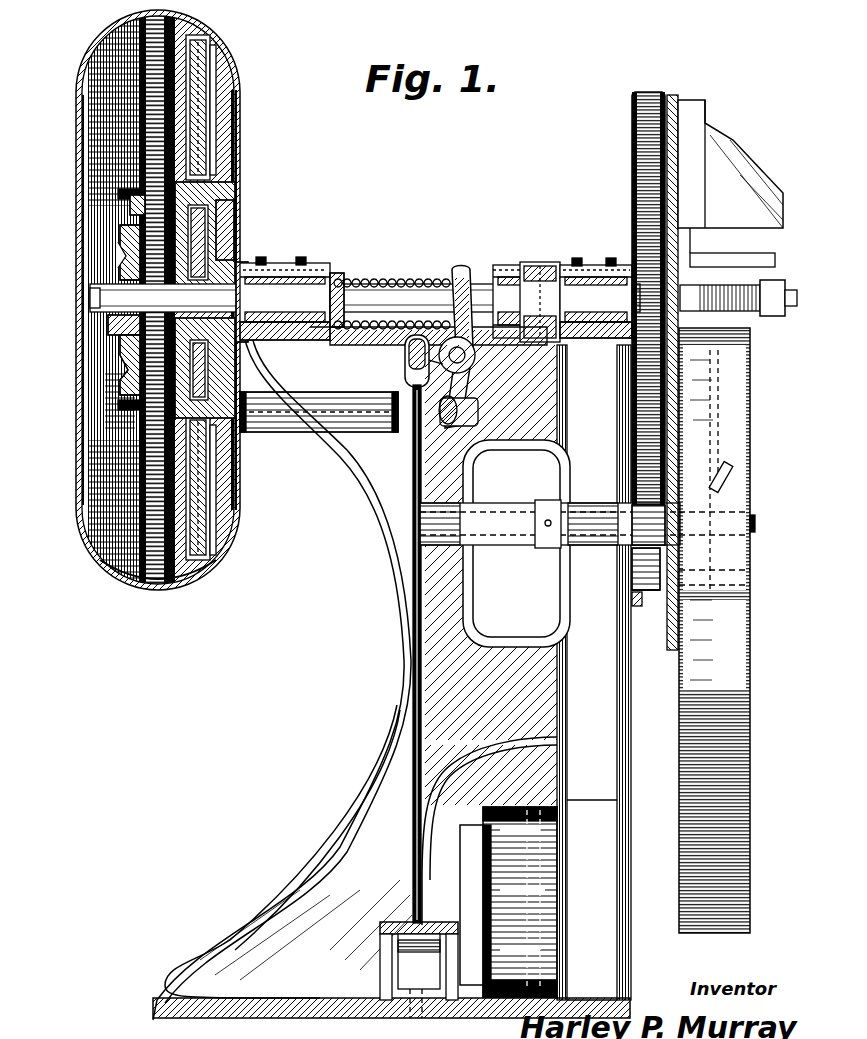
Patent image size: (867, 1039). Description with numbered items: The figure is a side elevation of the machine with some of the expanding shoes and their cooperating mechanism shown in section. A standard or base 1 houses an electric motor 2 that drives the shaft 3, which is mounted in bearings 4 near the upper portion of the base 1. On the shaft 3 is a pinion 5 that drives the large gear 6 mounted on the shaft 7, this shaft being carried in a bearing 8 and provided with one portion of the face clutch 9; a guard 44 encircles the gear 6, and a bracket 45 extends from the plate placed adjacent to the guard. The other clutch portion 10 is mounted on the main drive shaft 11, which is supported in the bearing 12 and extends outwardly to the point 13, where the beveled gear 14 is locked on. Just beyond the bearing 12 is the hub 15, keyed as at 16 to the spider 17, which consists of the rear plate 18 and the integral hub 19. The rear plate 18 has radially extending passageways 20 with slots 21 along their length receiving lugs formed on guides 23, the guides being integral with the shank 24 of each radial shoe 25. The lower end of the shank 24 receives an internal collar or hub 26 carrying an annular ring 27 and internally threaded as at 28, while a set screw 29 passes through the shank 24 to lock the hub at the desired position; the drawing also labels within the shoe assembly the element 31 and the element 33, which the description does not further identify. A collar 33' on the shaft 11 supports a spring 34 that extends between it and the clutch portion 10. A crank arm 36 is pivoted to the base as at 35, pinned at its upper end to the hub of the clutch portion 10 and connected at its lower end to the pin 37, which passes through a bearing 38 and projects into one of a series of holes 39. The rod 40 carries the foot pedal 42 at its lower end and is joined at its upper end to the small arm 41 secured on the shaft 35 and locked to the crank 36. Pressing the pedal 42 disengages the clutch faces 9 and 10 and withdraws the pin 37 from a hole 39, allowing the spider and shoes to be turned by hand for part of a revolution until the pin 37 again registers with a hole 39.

The standard or base 1 is at (402, 722).
The electric motor 2 is at (503, 812).
The shaft 3 is at (758, 521).
The bearings 4 is at (552, 552).
The pinion 5 is at (648, 588).
The large gear 6 is at (673, 97).
The shaft 7 is at (705, 292).
The bearing 8 is at (580, 268).
The face clutch portion 9 is at (546, 266).
The clutch portion 10 is at (520, 266).
The main drive shaft 11 is at (420, 288).
The bearing 12 is at (314, 266).
The point 13 is at (110, 320).
The beveled gear 14 is at (125, 335).
The hub 15 is at (250, 275).
The key 16 is at (265, 346).
The spider 17 is at (226, 150).
The rear plate 18 is at (237, 108).
The integral hub 19 is at (222, 262).
The radially extending passageways 20 is at (206, 52).
The slots 21 is at (213, 90).
The guides 23 is at (236, 428).
The shank 24 is at (114, 580).
The radial shoes 25 is at (78, 68).
The internal collar or hub 26 is at (135, 412).
The annular ring 27 is at (135, 220).
The internal threads 28 is at (200, 202).
The set screw 29 is at (120, 194).
The threaded spindle 31 is at (142, 25).
The nut 33 is at (92, 365).
The collar 33' is at (355, 284).
The spring 34 is at (384, 283).
The pivot shaft 35 is at (468, 366).
The crank arm 36 is at (466, 390).
The pin 37 is at (470, 415).
The bearing 38 is at (293, 420).
The holes 39 is at (234, 187).
The rod 40 is at (414, 611).
The small arm 41 is at (438, 338).
The foot pedal 42 is at (395, 955).
The guard 44 is at (652, 90).
The bracket 45 is at (727, 170).